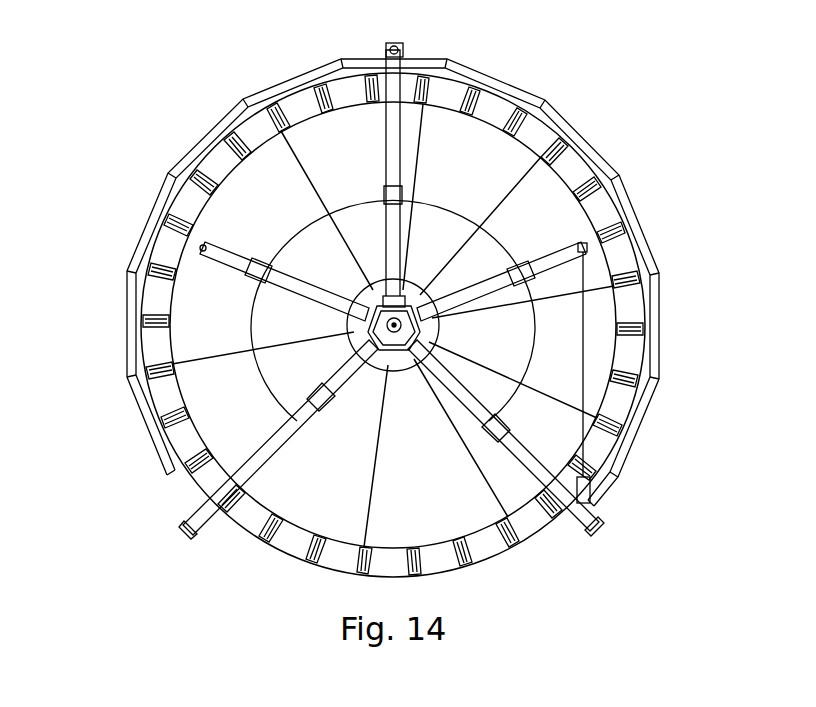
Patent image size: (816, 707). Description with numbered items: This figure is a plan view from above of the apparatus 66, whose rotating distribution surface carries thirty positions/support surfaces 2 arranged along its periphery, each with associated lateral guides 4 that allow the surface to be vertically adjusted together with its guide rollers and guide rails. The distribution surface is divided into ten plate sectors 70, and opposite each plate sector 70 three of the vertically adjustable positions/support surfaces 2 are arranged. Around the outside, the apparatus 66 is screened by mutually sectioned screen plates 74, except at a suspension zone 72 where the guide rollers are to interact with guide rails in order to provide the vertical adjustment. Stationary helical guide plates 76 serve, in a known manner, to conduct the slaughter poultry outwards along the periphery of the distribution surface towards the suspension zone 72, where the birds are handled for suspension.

The position/support surface 2 is at (587, 165).
The lateral guide 4 is at (632, 264).
The apparatus 66 is at (543, 101).
The plate sector 70 is at (441, 191).
The suspension zone 72 is at (333, 582).
The screen plate 74 is at (470, 65).
The helical guide plate 76 is at (290, 233).